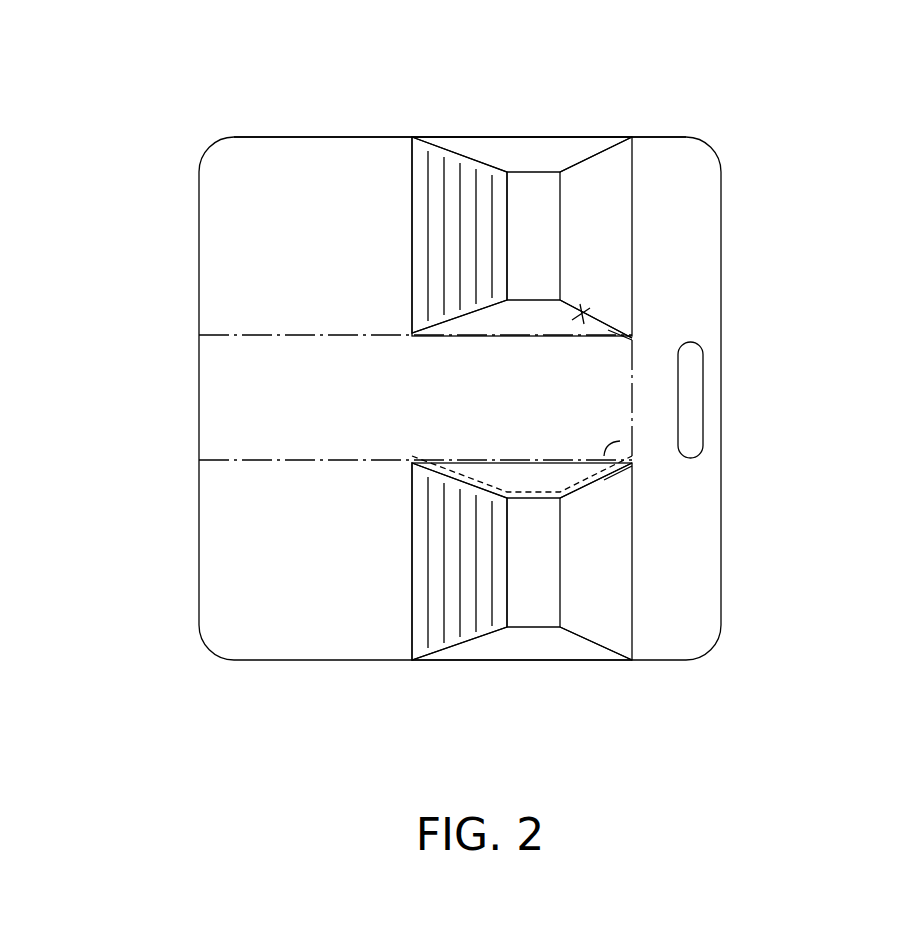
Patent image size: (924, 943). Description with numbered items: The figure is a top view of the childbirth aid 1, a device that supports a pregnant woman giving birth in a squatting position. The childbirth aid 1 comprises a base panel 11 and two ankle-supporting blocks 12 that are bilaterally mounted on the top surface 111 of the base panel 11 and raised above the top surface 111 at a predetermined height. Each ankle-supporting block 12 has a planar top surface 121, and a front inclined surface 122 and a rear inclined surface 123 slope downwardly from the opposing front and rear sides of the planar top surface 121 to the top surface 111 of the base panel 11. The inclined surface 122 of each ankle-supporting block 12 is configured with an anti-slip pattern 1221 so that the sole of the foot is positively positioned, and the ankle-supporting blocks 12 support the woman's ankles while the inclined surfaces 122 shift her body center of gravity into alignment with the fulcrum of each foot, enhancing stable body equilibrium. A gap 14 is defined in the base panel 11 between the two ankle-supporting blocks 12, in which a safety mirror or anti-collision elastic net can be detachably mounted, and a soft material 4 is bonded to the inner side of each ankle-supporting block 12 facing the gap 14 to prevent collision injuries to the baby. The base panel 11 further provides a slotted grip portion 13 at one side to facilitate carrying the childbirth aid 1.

The childbirth aid 1 is at (770, 265).
The base panel 11 is at (721, 227).
The top surface 111 is at (707, 195).
The ankle-supporting block 12 is at (545, 152).
The planar top surface 121 is at (533, 185).
The inclined surface 122 is at (470, 163).
The anti-slip pattern 1221 is at (445, 180).
The rear inclined surface 123 is at (610, 177).
The slotted grip portion 13 is at (695, 400).
The gap 14 is at (315, 415).
The soft material 4 is at (600, 305).